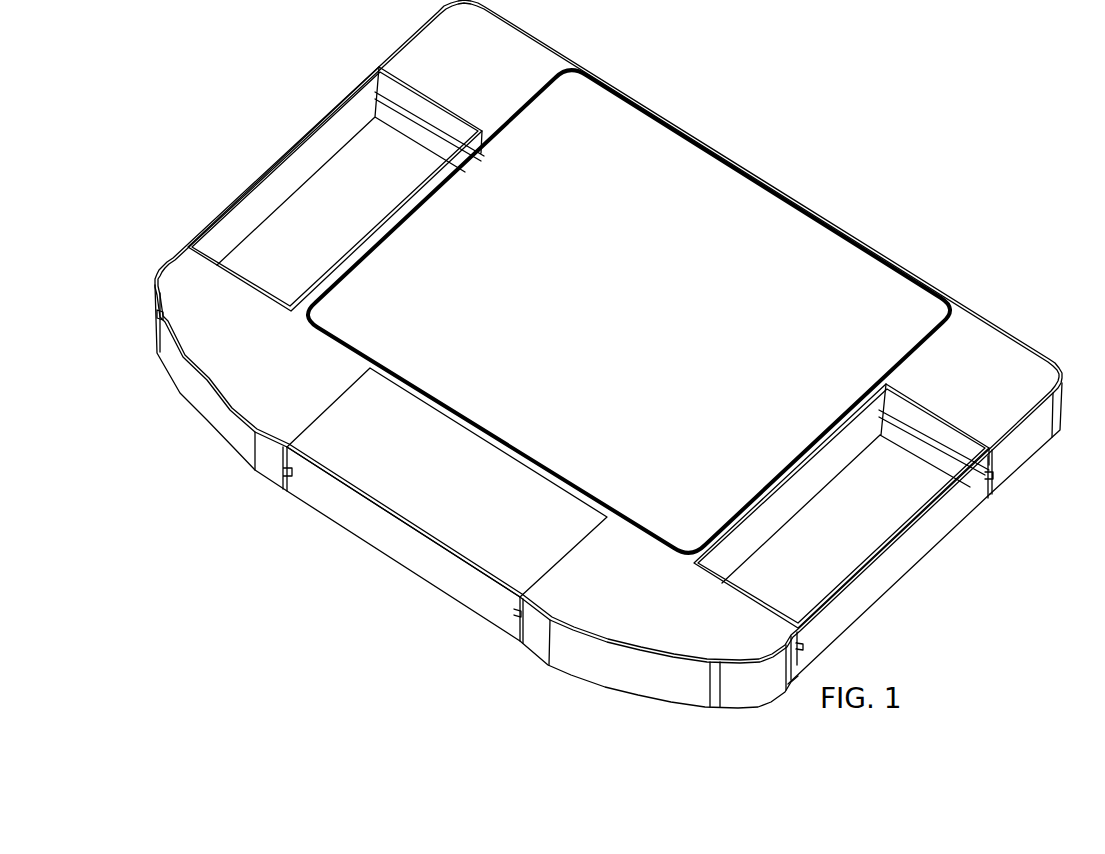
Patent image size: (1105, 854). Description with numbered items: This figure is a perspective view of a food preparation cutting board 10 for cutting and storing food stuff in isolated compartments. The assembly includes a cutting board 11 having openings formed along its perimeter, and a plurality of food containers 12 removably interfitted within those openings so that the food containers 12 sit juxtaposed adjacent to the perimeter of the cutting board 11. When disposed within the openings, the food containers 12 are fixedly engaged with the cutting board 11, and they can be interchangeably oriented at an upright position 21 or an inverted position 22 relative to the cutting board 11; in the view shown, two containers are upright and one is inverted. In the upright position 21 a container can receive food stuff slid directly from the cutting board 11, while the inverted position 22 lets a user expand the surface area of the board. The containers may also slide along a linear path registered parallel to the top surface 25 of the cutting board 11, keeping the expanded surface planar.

The food preparation cutting board 10 is at (612, 354).
The cutting board 11 is at (965, 330).
The food container 12 is at (336, 134).
The upright position 21 is at (288, 128).
The inverted position 22 is at (350, 582).
The top surface 25 is at (652, 306).